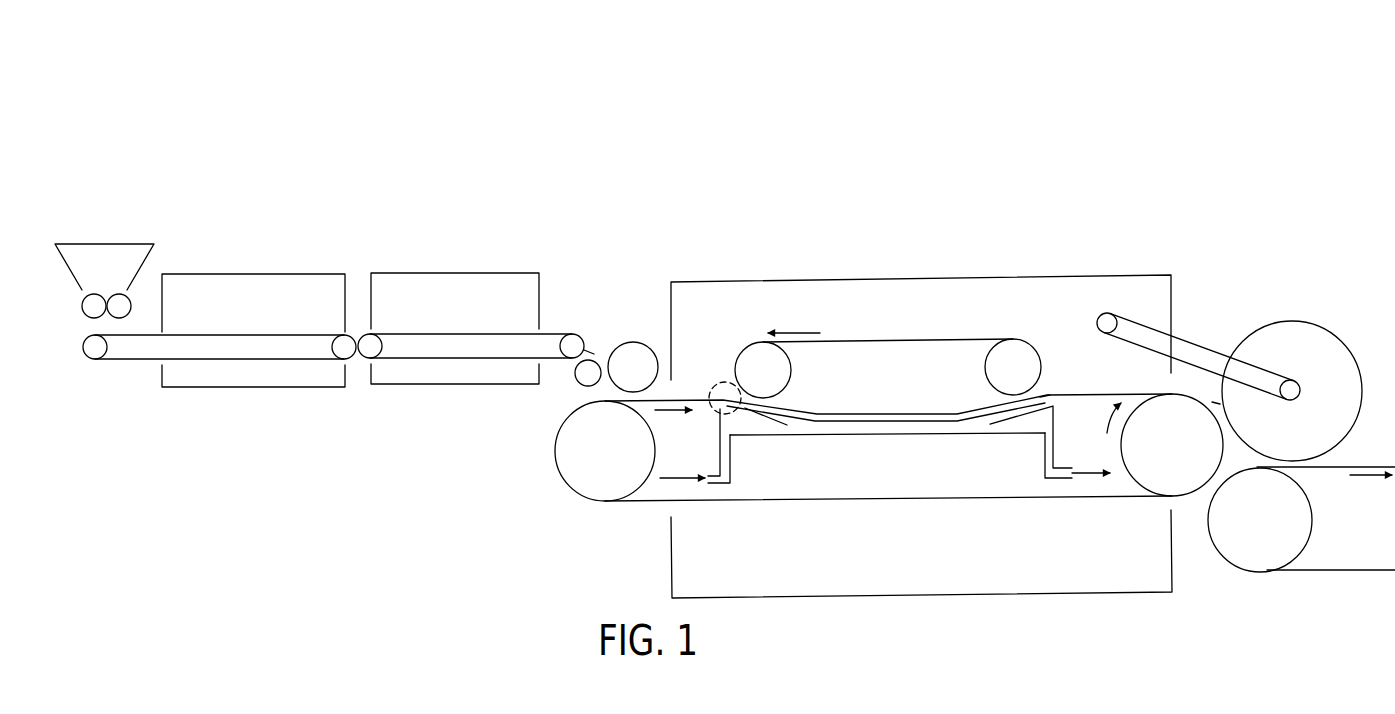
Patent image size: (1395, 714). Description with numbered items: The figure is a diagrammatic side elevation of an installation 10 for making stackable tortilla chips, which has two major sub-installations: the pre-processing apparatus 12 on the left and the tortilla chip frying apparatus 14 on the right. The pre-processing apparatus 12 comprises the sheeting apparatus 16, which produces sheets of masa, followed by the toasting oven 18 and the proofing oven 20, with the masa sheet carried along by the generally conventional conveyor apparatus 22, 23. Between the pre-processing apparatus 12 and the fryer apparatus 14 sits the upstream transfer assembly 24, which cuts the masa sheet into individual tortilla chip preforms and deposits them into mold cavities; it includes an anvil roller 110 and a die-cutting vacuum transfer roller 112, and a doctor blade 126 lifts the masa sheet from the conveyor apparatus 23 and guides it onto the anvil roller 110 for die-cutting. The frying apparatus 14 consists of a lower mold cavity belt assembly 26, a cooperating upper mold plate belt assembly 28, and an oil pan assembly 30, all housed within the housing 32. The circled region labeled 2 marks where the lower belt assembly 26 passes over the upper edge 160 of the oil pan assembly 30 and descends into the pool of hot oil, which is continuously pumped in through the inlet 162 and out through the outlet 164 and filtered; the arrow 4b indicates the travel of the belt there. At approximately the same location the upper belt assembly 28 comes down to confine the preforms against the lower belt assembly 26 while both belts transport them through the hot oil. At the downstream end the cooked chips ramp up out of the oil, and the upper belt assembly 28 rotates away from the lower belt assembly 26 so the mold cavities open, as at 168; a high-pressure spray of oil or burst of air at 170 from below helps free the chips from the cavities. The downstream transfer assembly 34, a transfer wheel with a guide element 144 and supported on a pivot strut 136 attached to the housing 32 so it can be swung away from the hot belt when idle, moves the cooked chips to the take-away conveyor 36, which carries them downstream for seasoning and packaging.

The installation 10 is at (793, 82).
The pre-processing apparatus 12 is at (363, 87).
The tortilla chip frying apparatus 14 is at (927, 167).
The sheeting apparatus 16 is at (96, 232).
The toasting oven 18 is at (262, 232).
The proofing oven 20 is at (458, 232).
The conveyor apparatus 22 is at (116, 378).
The conveyor apparatus 23 is at (405, 376).
The upstream transfer assembly 24 is at (633, 254).
The lower mold cavity belt assembly 26 is at (783, 503).
The upper mold plate belt assembly 28 is at (893, 341).
The oil pan assembly 30 is at (756, 426).
The housing 32 is at (1020, 277).
The downstream transfer assembly 34 is at (1284, 308).
The take-away conveyor 36 is at (1300, 588).
The material web 2 is at (722, 380).
The direction of view 4b is at (673, 425).
The anvil roller 110 is at (589, 373).
The die-cutting vacuum transfer roller 112 is at (654, 332).
The doctor blade 126 is at (589, 352).
The pivot strut 136 is at (1209, 398).
The guide belt 144 is at (1133, 337).
The upper edge 160 is at (718, 411).
The inlet 162 is at (719, 485).
The outlet 164 is at (1056, 481).
The mold opening location 168 is at (1044, 389).
The high-pressure spray 170 is at (1098, 423).